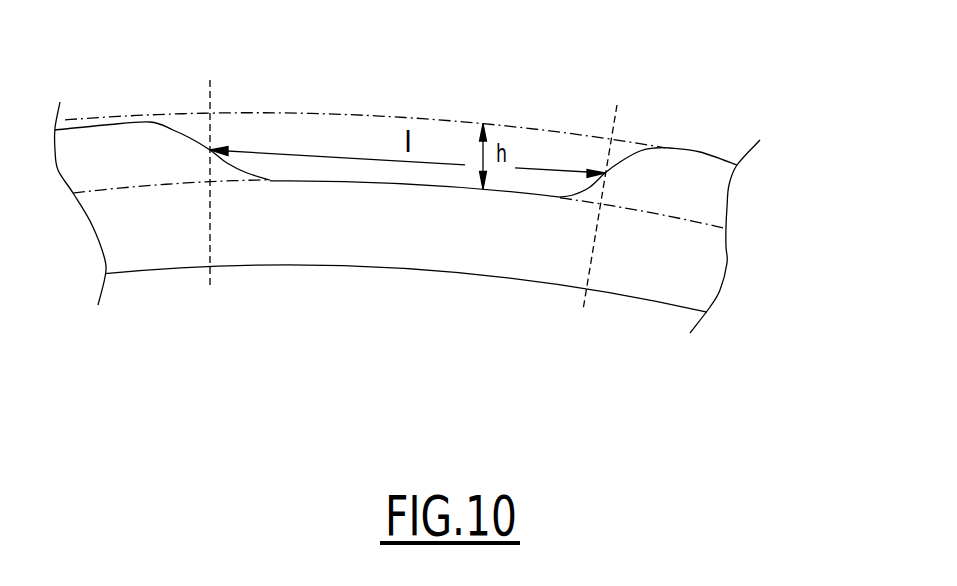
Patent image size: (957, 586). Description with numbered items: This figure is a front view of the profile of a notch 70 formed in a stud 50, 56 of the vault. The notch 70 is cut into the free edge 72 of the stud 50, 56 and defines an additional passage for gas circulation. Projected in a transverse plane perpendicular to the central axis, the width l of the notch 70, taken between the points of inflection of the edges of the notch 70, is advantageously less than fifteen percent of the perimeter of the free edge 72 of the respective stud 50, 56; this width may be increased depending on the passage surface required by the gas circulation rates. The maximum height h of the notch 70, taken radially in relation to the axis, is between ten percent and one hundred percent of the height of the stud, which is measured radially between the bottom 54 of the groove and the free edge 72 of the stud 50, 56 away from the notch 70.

The stud 50 is at (793, 216).
The stud 56 is at (793, 216).
The notch 70 is at (327, 145).
The free edge 72 is at (700, 150).
The bottom 54 is at (677, 235).